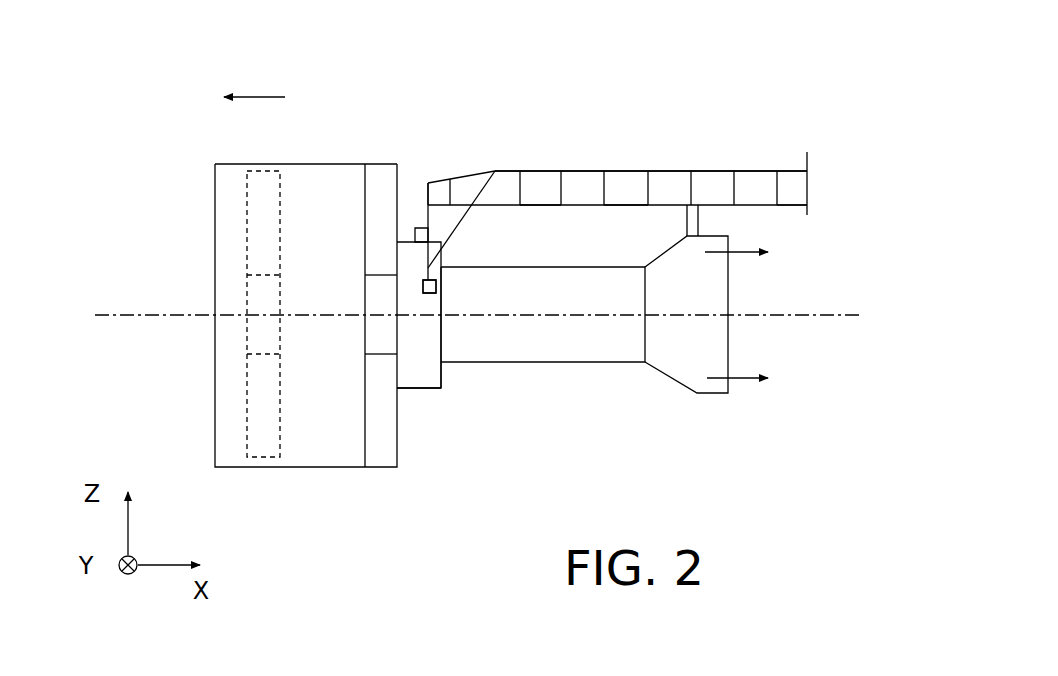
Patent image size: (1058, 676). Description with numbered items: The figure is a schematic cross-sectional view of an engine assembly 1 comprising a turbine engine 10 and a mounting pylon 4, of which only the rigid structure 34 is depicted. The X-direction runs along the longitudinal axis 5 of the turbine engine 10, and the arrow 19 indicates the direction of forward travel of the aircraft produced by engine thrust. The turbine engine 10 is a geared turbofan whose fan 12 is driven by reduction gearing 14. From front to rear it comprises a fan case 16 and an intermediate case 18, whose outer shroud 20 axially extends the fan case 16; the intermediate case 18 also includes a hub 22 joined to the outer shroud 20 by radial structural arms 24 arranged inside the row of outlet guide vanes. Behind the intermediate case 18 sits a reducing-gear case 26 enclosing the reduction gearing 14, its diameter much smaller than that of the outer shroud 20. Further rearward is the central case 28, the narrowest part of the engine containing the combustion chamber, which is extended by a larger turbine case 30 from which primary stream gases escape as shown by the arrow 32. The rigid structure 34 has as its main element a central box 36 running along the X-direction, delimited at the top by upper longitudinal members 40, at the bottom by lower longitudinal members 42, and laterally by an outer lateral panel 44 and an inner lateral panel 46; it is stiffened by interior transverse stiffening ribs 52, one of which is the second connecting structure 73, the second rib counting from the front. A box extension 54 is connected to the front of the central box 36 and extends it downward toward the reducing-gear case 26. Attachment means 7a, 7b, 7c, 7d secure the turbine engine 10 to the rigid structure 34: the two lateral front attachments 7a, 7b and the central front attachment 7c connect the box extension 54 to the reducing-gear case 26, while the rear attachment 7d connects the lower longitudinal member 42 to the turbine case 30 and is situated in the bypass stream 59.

The engine assembly 1 is at (572, 58).
The mounting pylon 4 is at (712, 140).
The longitudinal axis 5 is at (850, 316).
The lateral front attachment 7a is at (436, 286).
The lateral front attachment 7b is at (429, 286).
The central front attachment 7c is at (418, 227).
The rear attachment 7d is at (693, 215).
The turbine engine 10 is at (308, 478).
The fan 12 is at (258, 203).
The reduction gearing 14 is at (447, 375).
The fan case 16 is at (228, 163).
The intermediate case 18 is at (402, 160).
The arrow 19 is at (255, 92).
The outer shroud 20 is at (397, 165).
The hub 22 is at (380, 338).
The radial structural arms 24 is at (372, 228).
The reducing-gear case 26 is at (423, 390).
The central case 28 is at (555, 362).
The turbine case 30 is at (720, 232).
The arrow 32 is at (740, 398).
The rigid structure 34 is at (640, 166).
The central box 36 is at (587, 185).
The upper longitudinal members 40 is at (728, 170).
The lower longitudinal members 42 is at (540, 208).
The outer lateral panel 44 is at (795, 188).
The inner lateral panel 46 is at (793, 178).
The interior transverse stiffening ribs 52 is at (452, 188).
The box extension 54 is at (478, 230).
The bypass stream 59 is at (590, 260).
The second connecting structure 73 is at (490, 180).